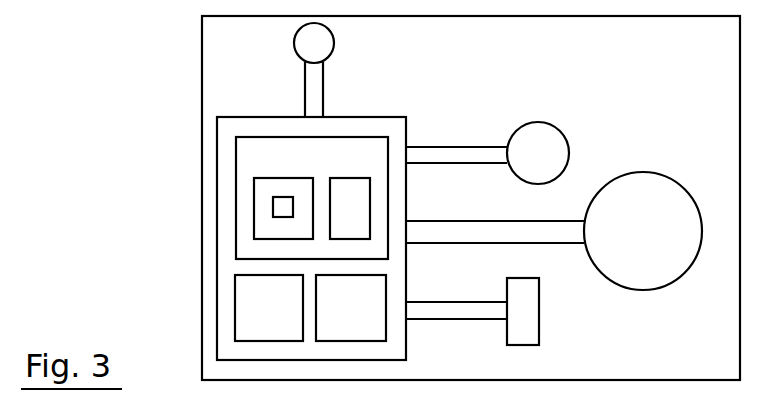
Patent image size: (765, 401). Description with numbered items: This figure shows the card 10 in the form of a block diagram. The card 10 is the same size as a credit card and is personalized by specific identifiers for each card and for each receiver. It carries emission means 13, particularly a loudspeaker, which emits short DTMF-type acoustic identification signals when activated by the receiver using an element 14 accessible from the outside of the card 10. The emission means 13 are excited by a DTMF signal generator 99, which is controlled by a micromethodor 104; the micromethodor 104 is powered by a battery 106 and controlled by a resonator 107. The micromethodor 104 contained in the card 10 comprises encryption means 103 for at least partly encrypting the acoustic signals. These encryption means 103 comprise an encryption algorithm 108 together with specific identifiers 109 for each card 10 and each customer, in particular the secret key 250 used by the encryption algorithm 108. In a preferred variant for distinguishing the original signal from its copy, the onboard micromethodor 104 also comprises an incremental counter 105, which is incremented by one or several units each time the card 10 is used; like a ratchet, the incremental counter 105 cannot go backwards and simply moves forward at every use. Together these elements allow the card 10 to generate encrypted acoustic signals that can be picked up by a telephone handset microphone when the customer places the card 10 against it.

The card 10 is at (201, 52).
The element accessible from the outside of the card 14 is at (334, 44).
The micromethodor 104 is at (365, 117).
The encryption means 103 is at (248, 137).
The specific identifiers 109 is at (268, 175).
The secret key 250 is at (273, 218).
The encryption algorithm 108 is at (363, 213).
The incremental counter 105 is at (236, 307).
The DTMF signal generator 99 is at (387, 293).
The battery 106 is at (552, 123).
The emission means 13 is at (653, 172).
The resonator 107 is at (535, 310).